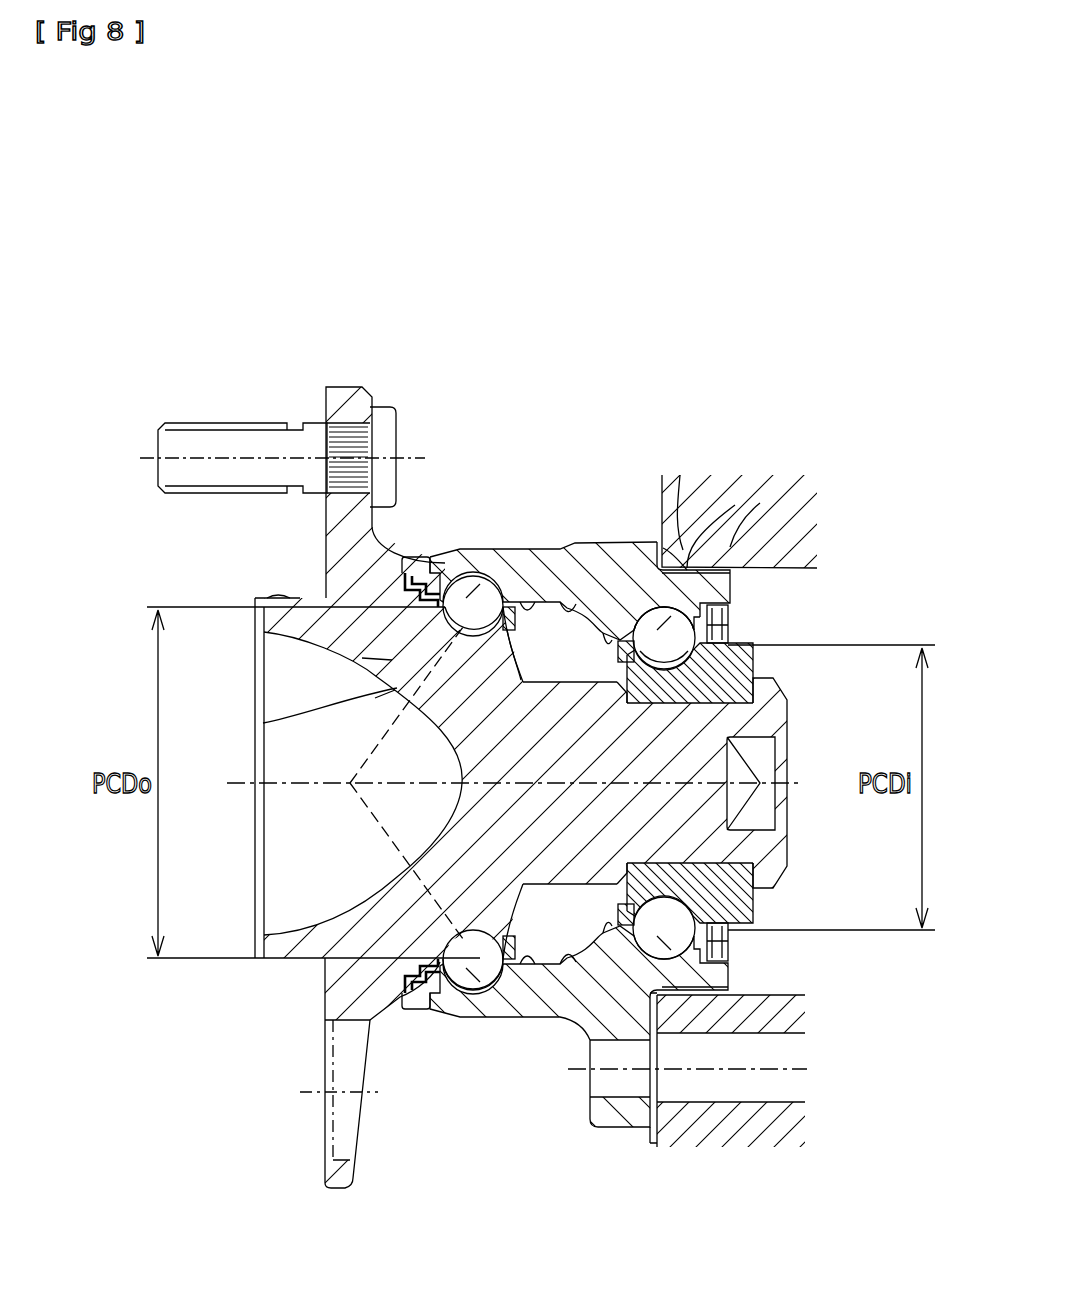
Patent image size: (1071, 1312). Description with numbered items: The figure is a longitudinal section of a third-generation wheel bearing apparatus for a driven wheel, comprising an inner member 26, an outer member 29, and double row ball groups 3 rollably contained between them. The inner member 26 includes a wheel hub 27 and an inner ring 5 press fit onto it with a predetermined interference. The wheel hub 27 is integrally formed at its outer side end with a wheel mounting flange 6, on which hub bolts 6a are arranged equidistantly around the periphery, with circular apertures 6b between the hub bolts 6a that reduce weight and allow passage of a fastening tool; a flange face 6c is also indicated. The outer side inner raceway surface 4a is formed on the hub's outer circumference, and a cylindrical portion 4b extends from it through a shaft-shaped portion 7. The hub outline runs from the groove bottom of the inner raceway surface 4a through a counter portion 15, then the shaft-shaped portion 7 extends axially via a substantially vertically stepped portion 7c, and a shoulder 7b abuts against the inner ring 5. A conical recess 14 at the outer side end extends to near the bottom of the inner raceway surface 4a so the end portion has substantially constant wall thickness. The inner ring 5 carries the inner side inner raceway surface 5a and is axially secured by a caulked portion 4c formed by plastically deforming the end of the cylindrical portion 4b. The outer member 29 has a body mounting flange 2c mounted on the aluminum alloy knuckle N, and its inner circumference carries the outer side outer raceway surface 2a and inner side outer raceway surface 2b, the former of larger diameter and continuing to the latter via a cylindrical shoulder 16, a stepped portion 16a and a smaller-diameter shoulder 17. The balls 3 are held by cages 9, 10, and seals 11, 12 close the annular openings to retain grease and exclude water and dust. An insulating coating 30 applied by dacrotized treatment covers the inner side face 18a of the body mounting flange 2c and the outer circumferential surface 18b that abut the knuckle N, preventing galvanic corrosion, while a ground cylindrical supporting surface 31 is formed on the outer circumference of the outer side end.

The outer side outer raceway surface 2a is at (460, 588).
The inner side outer raceway surface 2b is at (692, 580).
The body mounting flange 2c is at (620, 1105).
The balls 3 is at (550, 1017).
The outer side inner raceway surface 4a is at (275, 597).
The cylindrical portion 4b is at (703, 690).
The caulked portion 4c is at (767, 708).
The inner ring 5 is at (760, 663).
The inner side inner raceway surface 5a is at (667, 655).
The wheel mounting flange 6 is at (351, 390).
The hub bolts 6a is at (265, 450).
The circular apertures 6b is at (350, 1025).
The flange side face 6c is at (372, 540).
The shaft-shaped portion 7 is at (553, 684).
The shoulder 7b is at (640, 690).
The substantially vertically stepped portion 7c is at (510, 703).
The cage 9 is at (472, 925).
The cage 10 is at (618, 898).
The seal 11 is at (400, 990).
The seal 12 is at (730, 948).
The conical recess 14 is at (370, 817).
The counter portion 15 is at (503, 633).
The cylindrical shoulder 16 is at (517, 602).
The stepped portion 16a is at (565, 617).
The shoulder 17 is at (603, 650).
The inner side face 18a is at (667, 505).
The outer circumferential surface 18b is at (716, 546).
The inner member 26 is at (263, 723).
The wheel hub 27 is at (397, 688).
The outer member 29 is at (549, 585).
The insulating coating 30 is at (718, 535).
The supporting surface 31 is at (435, 556).
The knuckle N is at (790, 513).